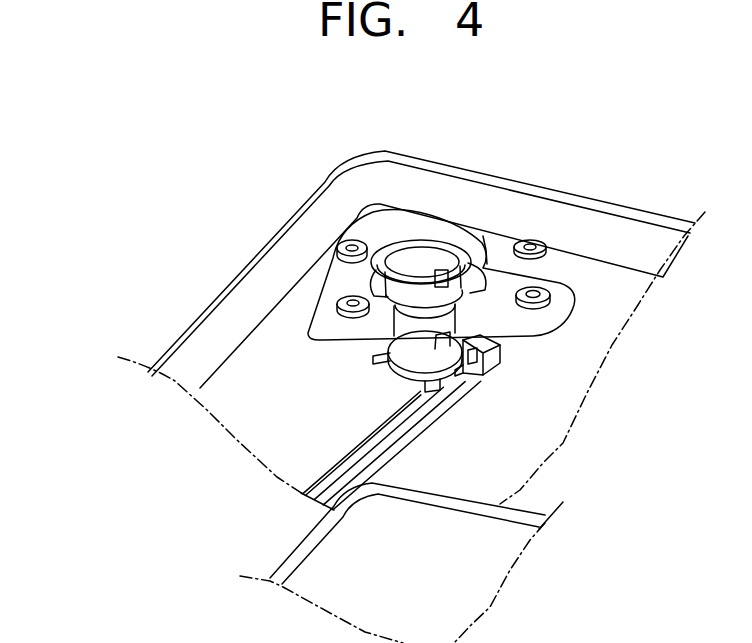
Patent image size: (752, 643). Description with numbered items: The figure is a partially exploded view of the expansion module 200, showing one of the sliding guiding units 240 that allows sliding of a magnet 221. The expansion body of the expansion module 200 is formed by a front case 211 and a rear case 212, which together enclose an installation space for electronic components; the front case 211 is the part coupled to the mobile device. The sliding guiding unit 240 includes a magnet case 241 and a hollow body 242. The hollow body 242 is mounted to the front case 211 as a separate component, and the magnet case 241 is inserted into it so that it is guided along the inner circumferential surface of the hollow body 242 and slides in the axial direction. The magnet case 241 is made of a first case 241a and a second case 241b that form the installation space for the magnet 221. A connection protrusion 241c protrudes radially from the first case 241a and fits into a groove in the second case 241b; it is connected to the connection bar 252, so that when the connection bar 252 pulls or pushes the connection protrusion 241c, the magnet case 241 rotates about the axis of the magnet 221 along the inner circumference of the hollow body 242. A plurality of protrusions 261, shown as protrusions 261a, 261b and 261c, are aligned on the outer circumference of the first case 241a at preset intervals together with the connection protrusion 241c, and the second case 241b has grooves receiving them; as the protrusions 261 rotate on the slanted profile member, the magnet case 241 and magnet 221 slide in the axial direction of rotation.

The expansion module 200 is at (595, 169).
The front case 211 is at (222, 323).
The rear case 212 is at (487, 555).
The magnet 221 is at (483, 236).
The sliding guiding unit 240 is at (380, 206).
The magnet case 241 is at (128, 152).
The first case 241a is at (417, 330).
The second case 241b is at (405, 268).
The connection protrusion 241c is at (483, 378).
The hollow body 242 is at (430, 232).
The connection bar 252 is at (458, 402).
The protrusion 261 is at (82, 374).
The protrusion 261a is at (427, 385).
The protrusion 261b is at (380, 357).
The protrusion 261c is at (387, 337).